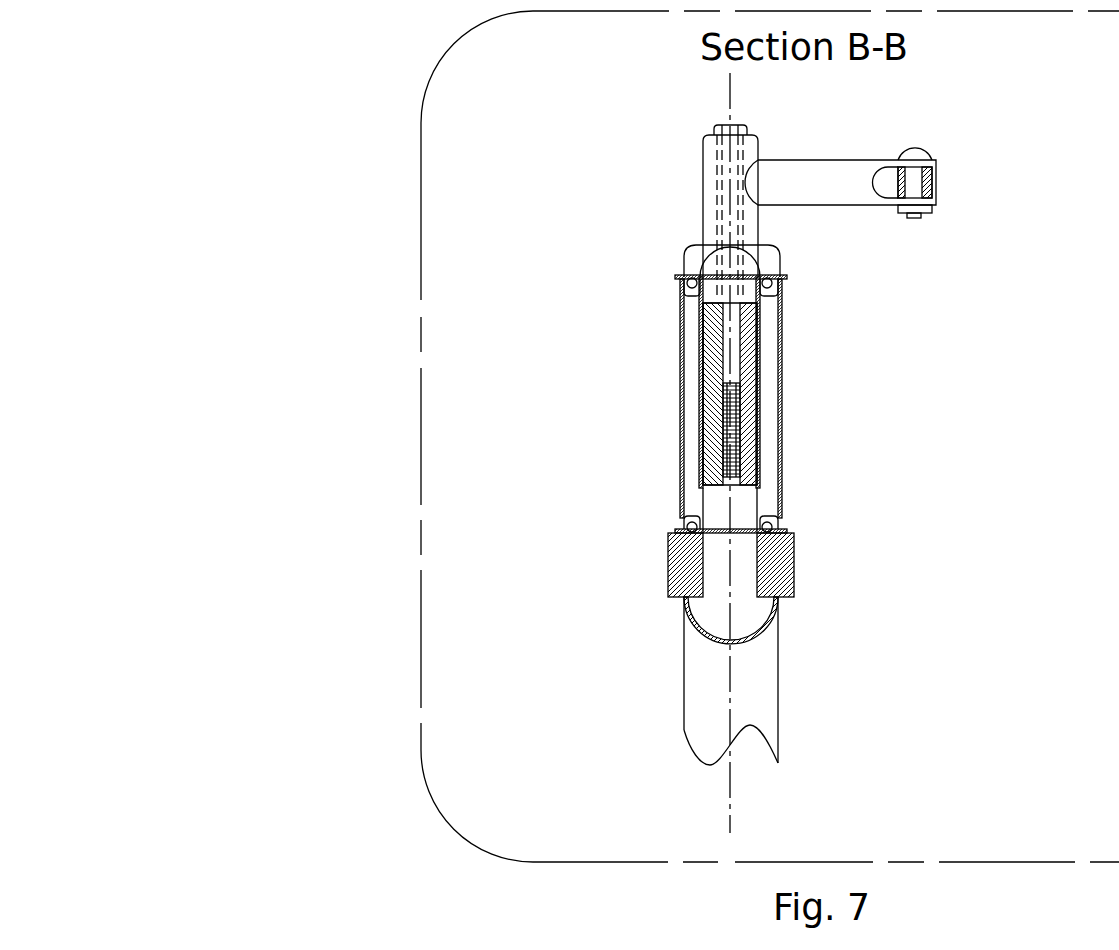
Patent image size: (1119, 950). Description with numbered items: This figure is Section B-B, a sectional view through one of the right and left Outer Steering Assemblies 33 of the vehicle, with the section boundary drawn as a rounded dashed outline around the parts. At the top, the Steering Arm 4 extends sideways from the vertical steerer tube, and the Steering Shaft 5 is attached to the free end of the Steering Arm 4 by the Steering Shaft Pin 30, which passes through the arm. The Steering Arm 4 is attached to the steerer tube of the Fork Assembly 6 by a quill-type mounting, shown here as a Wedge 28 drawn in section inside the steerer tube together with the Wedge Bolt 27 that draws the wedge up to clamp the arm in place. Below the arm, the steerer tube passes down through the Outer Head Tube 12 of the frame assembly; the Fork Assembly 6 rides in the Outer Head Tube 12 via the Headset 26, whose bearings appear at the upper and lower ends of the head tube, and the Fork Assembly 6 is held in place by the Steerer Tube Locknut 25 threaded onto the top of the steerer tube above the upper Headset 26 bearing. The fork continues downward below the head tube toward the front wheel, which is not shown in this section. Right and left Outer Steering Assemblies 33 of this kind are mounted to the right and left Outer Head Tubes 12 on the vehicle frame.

The steering arm 4 is at (710, 175).
The steering shaft 5 is at (928, 183).
The fork assembly 6 is at (758, 683).
The outer head tube 12 is at (782, 495).
The steerer tube locknut 25 is at (688, 265).
The headset 26 is at (762, 292).
The wedge bolt 27 is at (733, 368).
The wedge 28 is at (747, 442).
The steering shaft pin 30 is at (915, 153).
The outer steering assembly 33 is at (421, 443).